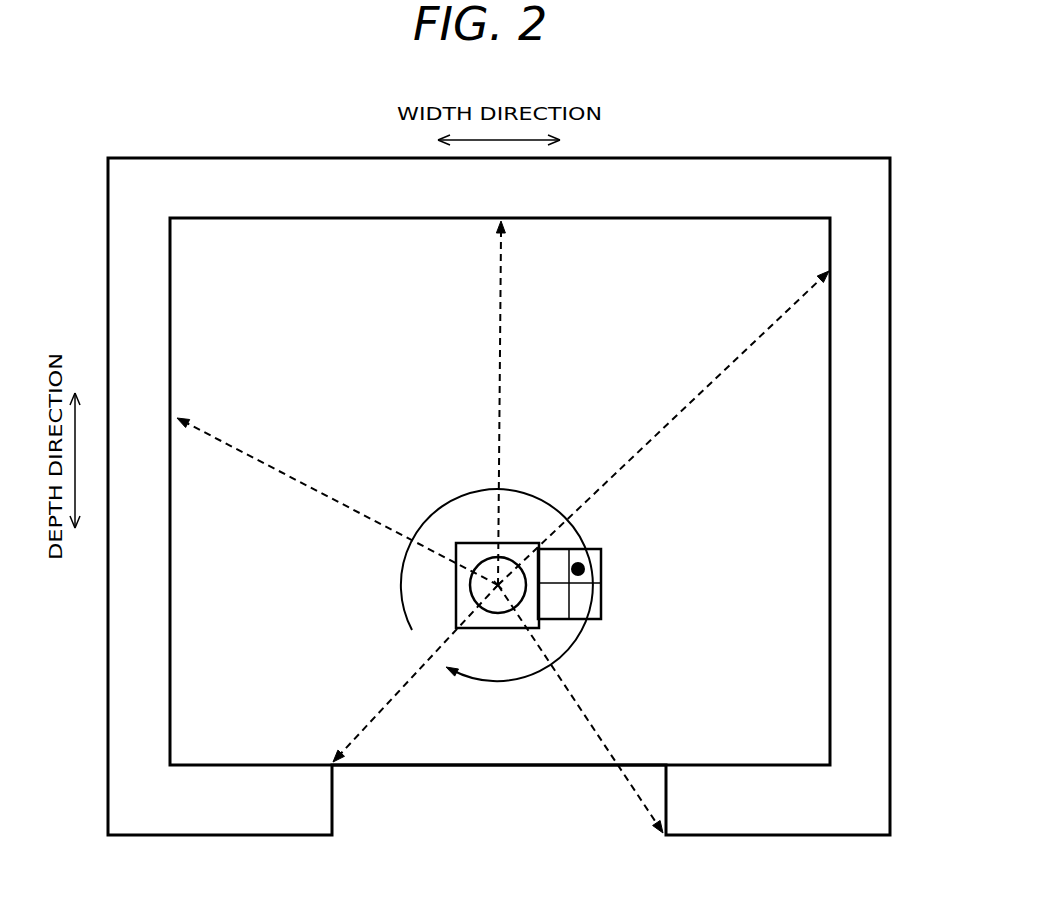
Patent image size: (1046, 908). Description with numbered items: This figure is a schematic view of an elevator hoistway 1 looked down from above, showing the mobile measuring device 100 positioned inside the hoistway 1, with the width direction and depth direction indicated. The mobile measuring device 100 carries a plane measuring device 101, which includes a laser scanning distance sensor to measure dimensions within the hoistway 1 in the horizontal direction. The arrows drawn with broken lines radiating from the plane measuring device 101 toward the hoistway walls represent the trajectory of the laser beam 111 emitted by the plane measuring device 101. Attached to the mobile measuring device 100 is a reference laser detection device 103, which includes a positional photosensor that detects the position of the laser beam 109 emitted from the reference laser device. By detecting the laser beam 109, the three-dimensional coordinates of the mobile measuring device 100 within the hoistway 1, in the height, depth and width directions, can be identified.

The hoistway 1 is at (872, 496).
The mobile measuring device 100 is at (502, 629).
The plane measuring device 101 is at (457, 587).
The reference laser detection device 103 is at (601, 602).
The laser beam 109 is at (601, 557).
The laser beam 111 is at (501, 342).